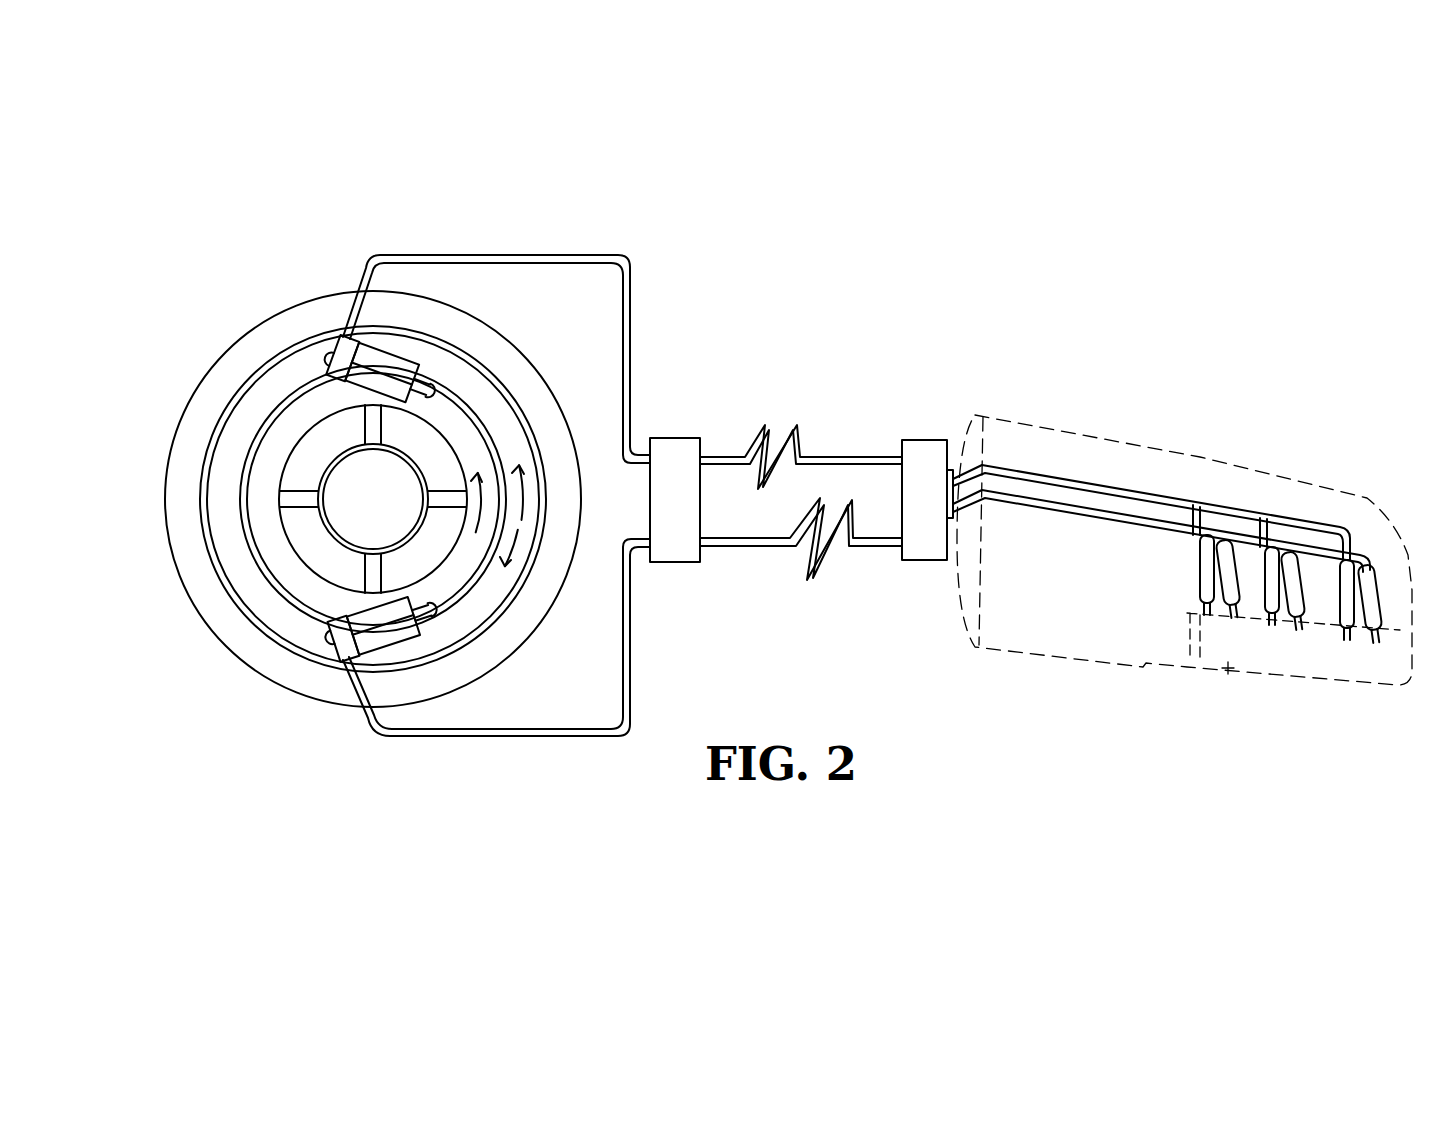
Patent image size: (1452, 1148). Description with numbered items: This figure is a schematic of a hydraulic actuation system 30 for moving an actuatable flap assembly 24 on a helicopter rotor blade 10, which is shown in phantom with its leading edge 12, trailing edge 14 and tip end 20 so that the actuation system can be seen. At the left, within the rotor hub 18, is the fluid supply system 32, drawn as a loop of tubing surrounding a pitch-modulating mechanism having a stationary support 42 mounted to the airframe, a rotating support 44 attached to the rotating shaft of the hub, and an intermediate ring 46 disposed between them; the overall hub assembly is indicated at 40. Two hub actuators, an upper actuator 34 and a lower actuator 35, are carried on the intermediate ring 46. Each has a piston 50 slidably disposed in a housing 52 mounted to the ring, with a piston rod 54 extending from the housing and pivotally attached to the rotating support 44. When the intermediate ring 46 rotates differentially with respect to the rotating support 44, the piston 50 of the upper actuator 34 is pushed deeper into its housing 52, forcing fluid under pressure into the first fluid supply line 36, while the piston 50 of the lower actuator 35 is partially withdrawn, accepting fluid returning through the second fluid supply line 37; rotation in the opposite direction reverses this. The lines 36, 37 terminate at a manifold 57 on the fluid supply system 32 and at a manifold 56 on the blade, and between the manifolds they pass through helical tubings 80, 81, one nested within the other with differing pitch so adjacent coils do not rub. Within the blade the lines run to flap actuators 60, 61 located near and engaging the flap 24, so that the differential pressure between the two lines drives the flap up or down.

The rotor blade 10 is at (1272, 465).
The leading edge 12 is at (1220, 460).
The trailing edge 14 is at (1146, 663).
The rotor hub 18 is at (250, 740).
The tip end 20 is at (1402, 540).
The actuatable flap assembly 24 is at (1228, 674).
The hydraulic actuation system 30 is at (886, 380).
The fluid supply system 32 is at (565, 243).
The upper hub actuator 34 is at (393, 362).
The lower hub actuator 35 is at (420, 665).
The first fluid supply line 36 is at (632, 308).
The second fluid supply line 37 is at (620, 707).
The wheel assembly 40 is at (205, 655).
The stationary support 42 is at (282, 312).
The rotating support 44 is at (476, 436).
The intermediate ring 46 is at (243, 402).
The piston 50 is at (331, 380).
The actuator housing 52 is at (412, 358).
The piston rod 54 is at (418, 400).
The blade manifold 56 is at (925, 440).
The hub manifold 57 is at (672, 437).
The first flap actuator 60 is at (1197, 575).
The second flap actuator 61 is at (1378, 580).
The first tubing 80 is at (770, 428).
The second tubing 81 is at (808, 580).